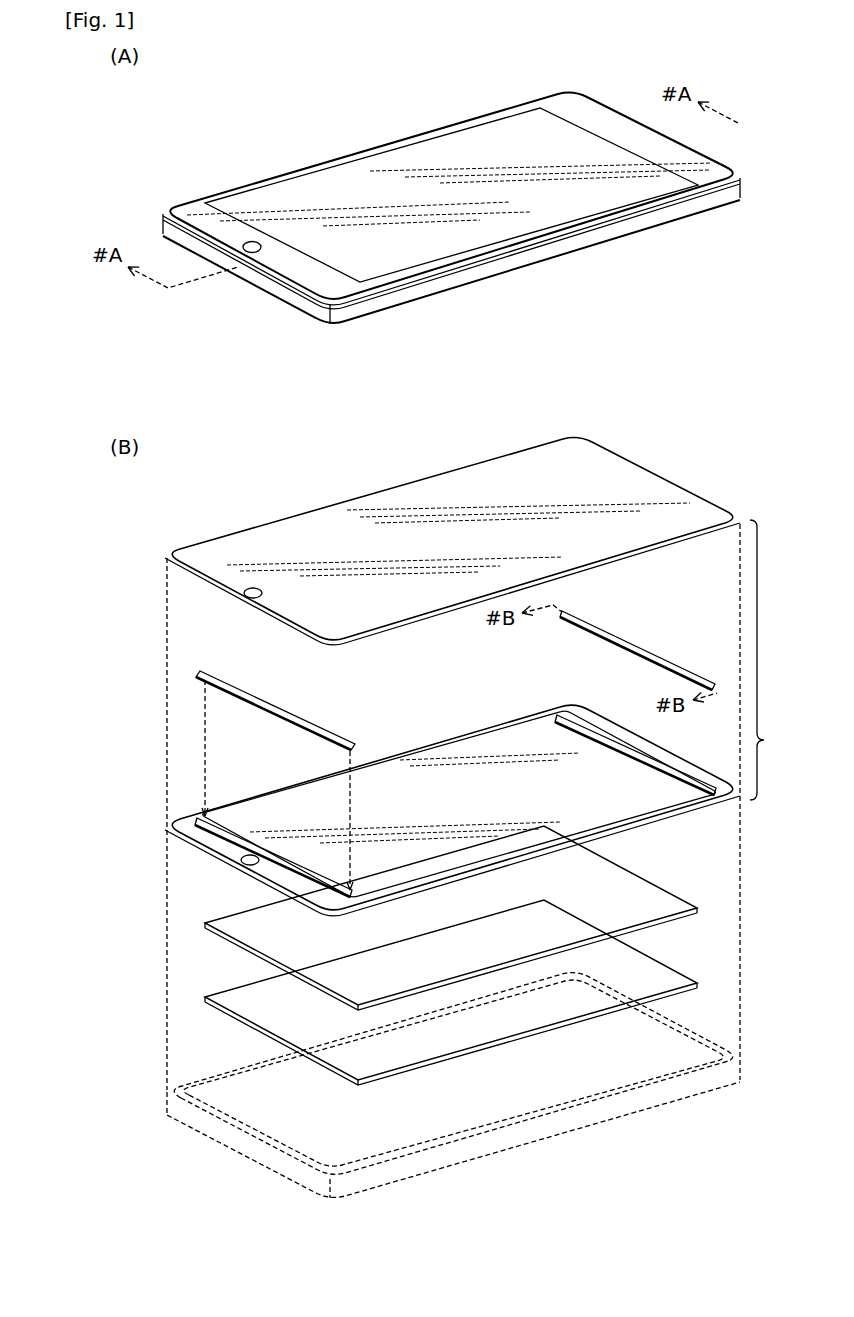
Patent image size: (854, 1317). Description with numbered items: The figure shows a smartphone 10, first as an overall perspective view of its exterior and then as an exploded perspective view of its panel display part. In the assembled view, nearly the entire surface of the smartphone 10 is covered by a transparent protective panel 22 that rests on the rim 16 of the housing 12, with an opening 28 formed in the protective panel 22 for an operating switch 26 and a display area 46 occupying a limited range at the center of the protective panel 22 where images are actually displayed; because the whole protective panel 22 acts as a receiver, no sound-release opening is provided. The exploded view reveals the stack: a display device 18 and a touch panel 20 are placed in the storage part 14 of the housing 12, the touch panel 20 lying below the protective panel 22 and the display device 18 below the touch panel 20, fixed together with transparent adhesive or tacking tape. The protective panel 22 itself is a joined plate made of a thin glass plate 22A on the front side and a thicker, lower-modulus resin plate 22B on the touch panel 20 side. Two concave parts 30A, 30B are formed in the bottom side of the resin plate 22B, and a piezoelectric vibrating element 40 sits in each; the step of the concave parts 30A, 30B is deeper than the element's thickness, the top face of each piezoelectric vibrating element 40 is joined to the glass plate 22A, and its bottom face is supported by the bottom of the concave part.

The smartphone 10 is at (507, 80).
The housing 12 is at (655, 228).
The storage part 14 is at (682, 1057).
The rim 16 is at (165, 1092).
The display device 18 is at (663, 965).
The touch panel 20 is at (663, 890).
The protective panel 22 is at (725, 160).
The glass plate 22A is at (700, 492).
The resin plate 22B is at (437, 742).
The operating switch 26 is at (252, 241).
The opening 28 is at (253, 587).
The concave part 30A is at (568, 718).
The concave part 30B is at (203, 817).
The piezoelectric vibrating element 40 is at (632, 645).
The display area 46 is at (306, 172).